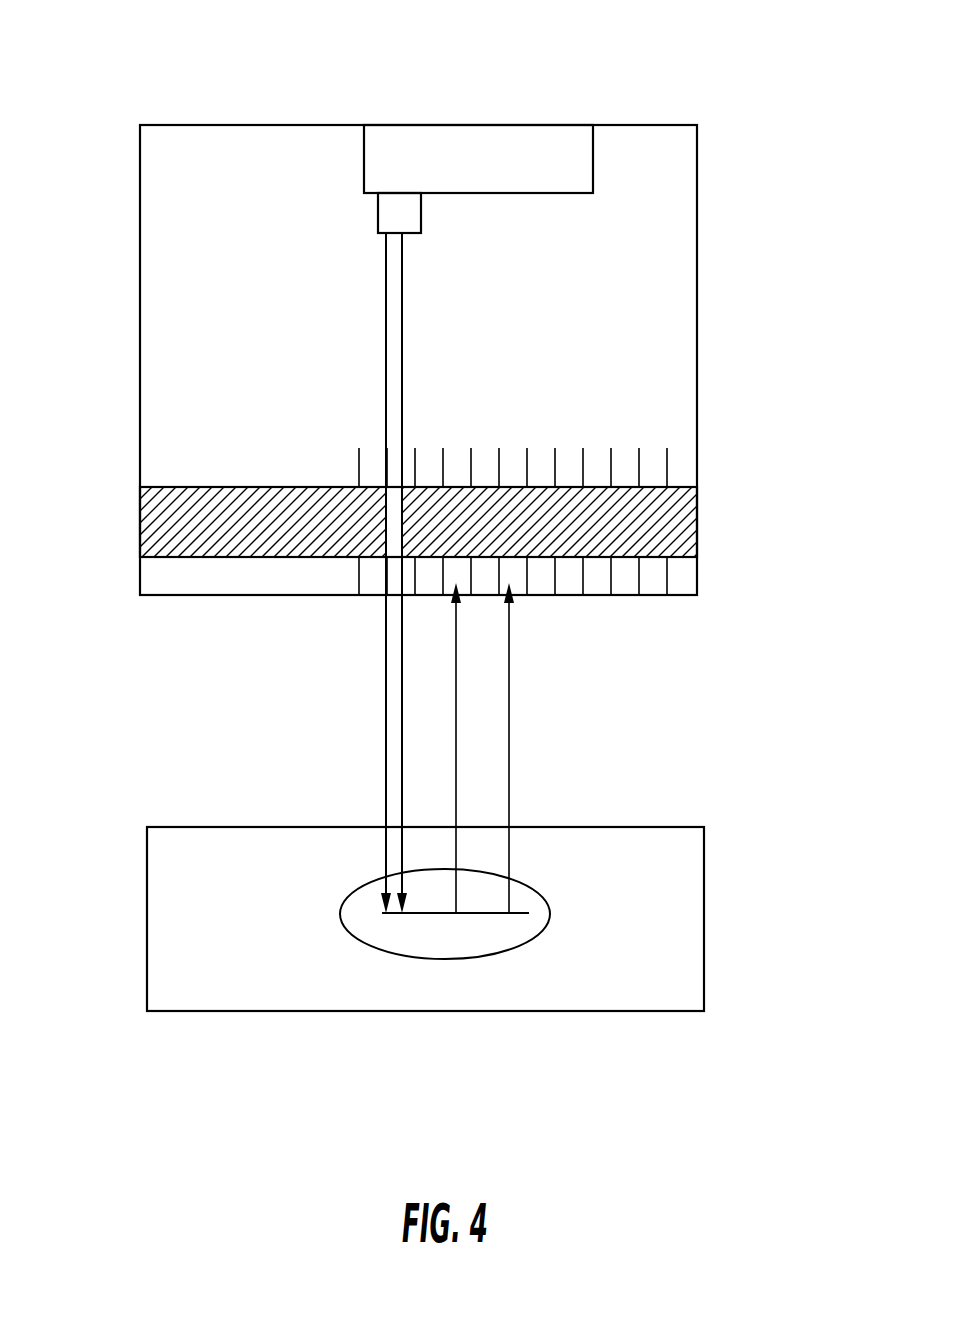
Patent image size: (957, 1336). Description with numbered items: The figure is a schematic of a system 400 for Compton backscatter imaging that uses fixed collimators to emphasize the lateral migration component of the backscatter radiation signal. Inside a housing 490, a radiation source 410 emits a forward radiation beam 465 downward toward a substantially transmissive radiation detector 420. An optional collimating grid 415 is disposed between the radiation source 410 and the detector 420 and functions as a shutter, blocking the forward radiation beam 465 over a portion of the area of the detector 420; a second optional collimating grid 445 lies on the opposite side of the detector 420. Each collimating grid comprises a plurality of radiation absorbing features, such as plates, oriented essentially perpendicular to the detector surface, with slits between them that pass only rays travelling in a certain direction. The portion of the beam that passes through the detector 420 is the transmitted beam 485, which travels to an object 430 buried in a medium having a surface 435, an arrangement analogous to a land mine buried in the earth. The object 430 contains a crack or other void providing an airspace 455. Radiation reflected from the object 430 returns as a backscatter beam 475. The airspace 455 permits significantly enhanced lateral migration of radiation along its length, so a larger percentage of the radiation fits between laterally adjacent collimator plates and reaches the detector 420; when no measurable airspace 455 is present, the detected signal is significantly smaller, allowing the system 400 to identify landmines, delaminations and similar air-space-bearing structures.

The system 400 is at (126, 28).
The radiation source 410 is at (593, 165).
The collimating grid 415 is at (697, 458).
The substantially transmissive radiation detector 420 is at (697, 530).
The object 430 is at (371, 946).
The surface 435 is at (563, 825).
The collimating grid 445 is at (697, 583).
The airspace 455 is at (496, 913).
The forward radiation beam 465 is at (385, 408).
The backscatter beam 475 is at (512, 708).
The transmitted beam 485 is at (400, 708).
The housing 490 is at (140, 340).